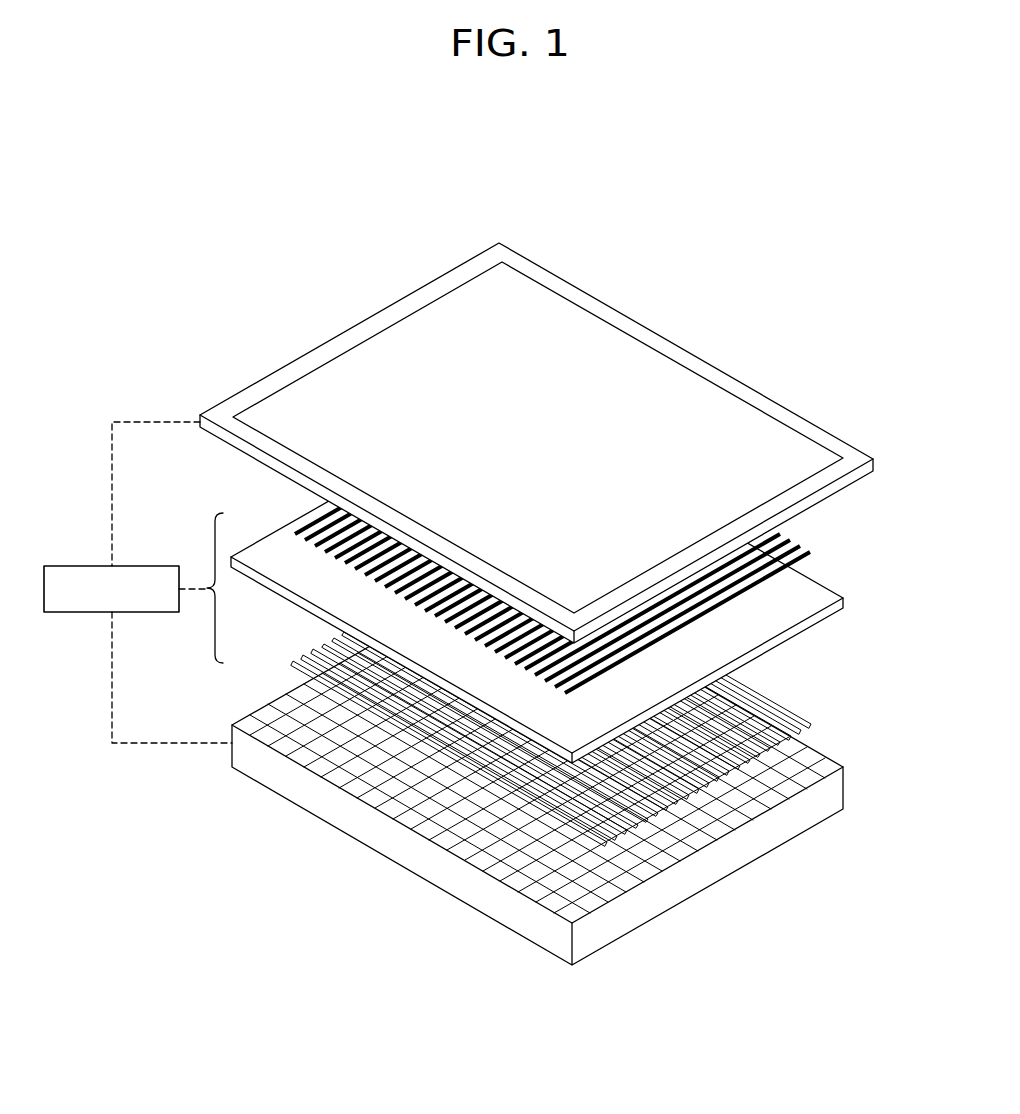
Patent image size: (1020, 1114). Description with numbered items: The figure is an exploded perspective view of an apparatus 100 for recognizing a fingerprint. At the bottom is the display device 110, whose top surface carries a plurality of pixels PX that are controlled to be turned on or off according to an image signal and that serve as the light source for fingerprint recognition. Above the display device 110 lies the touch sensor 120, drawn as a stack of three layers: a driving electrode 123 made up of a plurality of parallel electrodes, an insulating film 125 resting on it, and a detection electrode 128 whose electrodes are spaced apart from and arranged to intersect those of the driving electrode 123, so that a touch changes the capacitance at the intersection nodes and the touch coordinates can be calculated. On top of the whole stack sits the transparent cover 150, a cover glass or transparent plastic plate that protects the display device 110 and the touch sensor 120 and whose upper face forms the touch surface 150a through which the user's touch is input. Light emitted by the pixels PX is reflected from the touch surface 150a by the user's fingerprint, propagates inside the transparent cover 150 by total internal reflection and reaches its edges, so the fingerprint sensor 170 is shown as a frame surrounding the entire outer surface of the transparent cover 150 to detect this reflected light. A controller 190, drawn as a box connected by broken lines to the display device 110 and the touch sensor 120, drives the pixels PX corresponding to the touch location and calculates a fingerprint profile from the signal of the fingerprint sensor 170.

The apparatus for recognizing a fingerprint 100 is at (853, 296).
The display device 110 is at (568, 767).
The touch sensor 120 is at (597, 619).
The driving electrode 123 is at (598, 694).
The insulating film 125 is at (838, 607).
The detection electrode 128 is at (803, 547).
The transparent cover 150 is at (536, 443).
The touch surface 150a is at (707, 388).
The fingerprint sensor 170 is at (657, 342).
The controller 190 is at (128, 565).
The pixels PX is at (673, 853).